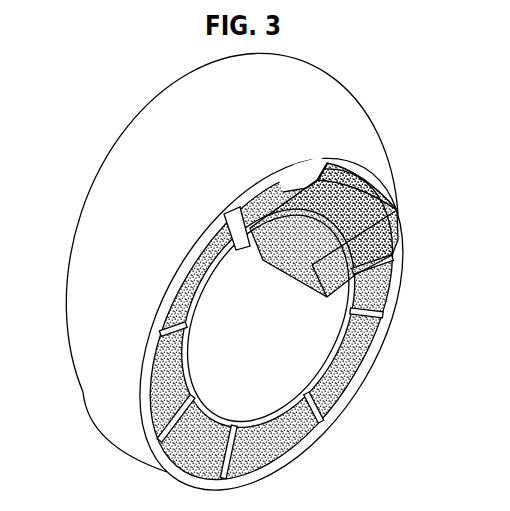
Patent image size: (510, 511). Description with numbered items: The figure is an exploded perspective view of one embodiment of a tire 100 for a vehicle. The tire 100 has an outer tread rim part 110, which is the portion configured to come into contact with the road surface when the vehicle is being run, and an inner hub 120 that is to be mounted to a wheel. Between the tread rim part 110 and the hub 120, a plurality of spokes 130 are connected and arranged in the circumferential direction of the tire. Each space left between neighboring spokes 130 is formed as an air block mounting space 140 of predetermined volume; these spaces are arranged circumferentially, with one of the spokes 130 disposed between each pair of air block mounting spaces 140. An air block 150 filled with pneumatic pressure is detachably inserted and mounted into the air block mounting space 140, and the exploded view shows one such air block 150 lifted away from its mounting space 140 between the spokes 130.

The tire 100 is at (126, 167).
The tread rim part 110 is at (256, 122).
The hub 120 is at (335, 345).
The spokes 130 is at (238, 230).
The air block mounting space 140 is at (300, 189).
The air block 150 is at (349, 197).